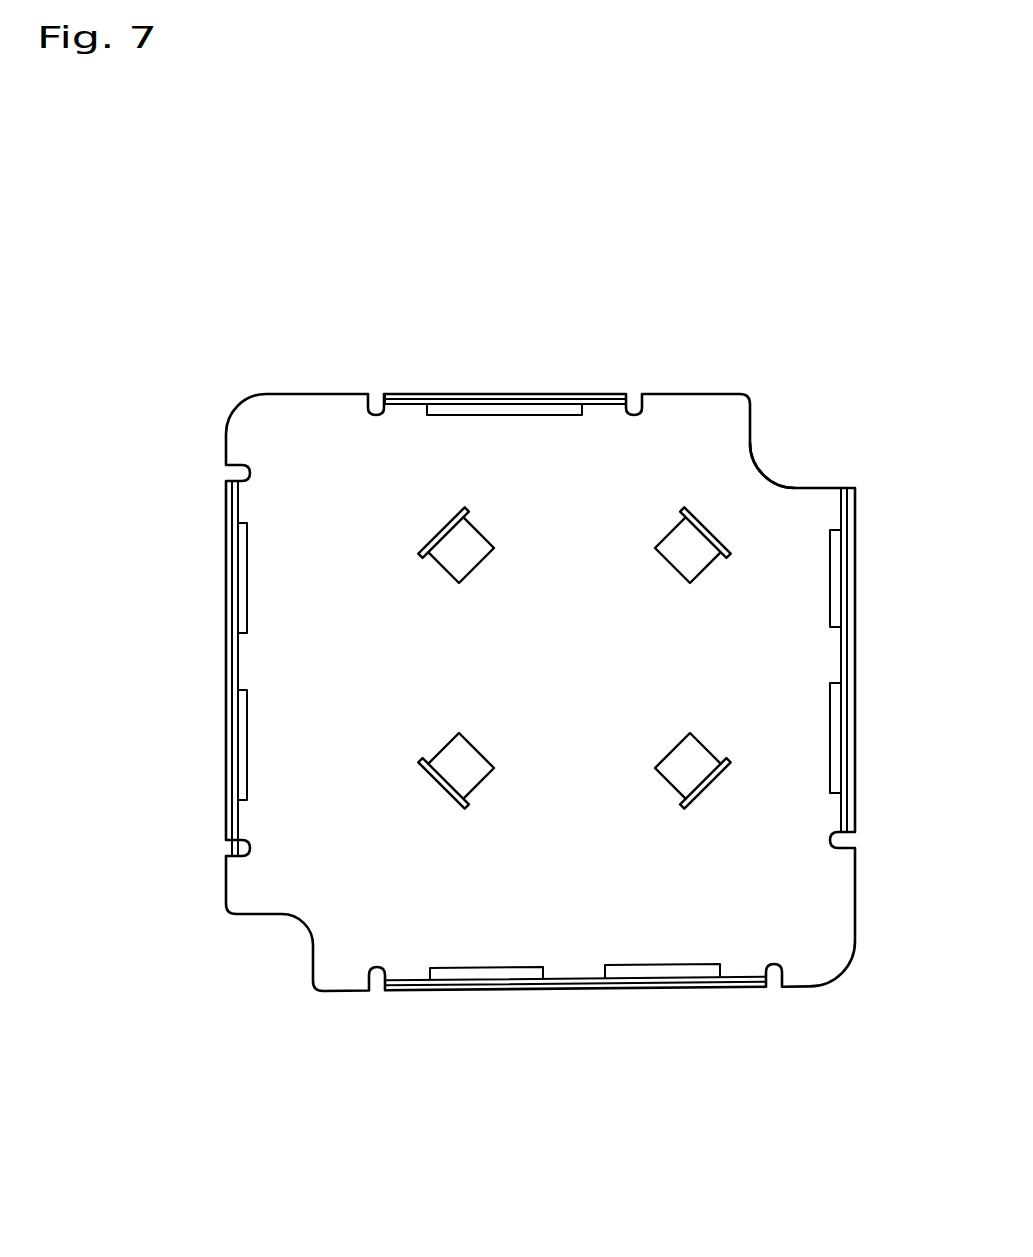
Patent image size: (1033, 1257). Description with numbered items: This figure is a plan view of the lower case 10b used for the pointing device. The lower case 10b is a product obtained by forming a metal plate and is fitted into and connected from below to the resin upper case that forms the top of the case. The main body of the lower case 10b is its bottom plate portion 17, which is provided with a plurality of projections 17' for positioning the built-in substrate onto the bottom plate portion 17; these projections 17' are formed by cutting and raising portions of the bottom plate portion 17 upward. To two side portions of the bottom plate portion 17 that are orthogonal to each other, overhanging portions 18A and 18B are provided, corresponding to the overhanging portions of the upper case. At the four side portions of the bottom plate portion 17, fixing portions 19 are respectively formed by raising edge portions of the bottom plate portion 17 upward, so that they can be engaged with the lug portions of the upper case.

The lower case 10b is at (590, 364).
The fixing portions 19 is at (470, 393).
The overhanging portion 18A is at (250, 661).
The overhanging portion 18B is at (576, 960).
The projections 17' is at (577, 666).
The bottom plate portion 17 is at (786, 500).